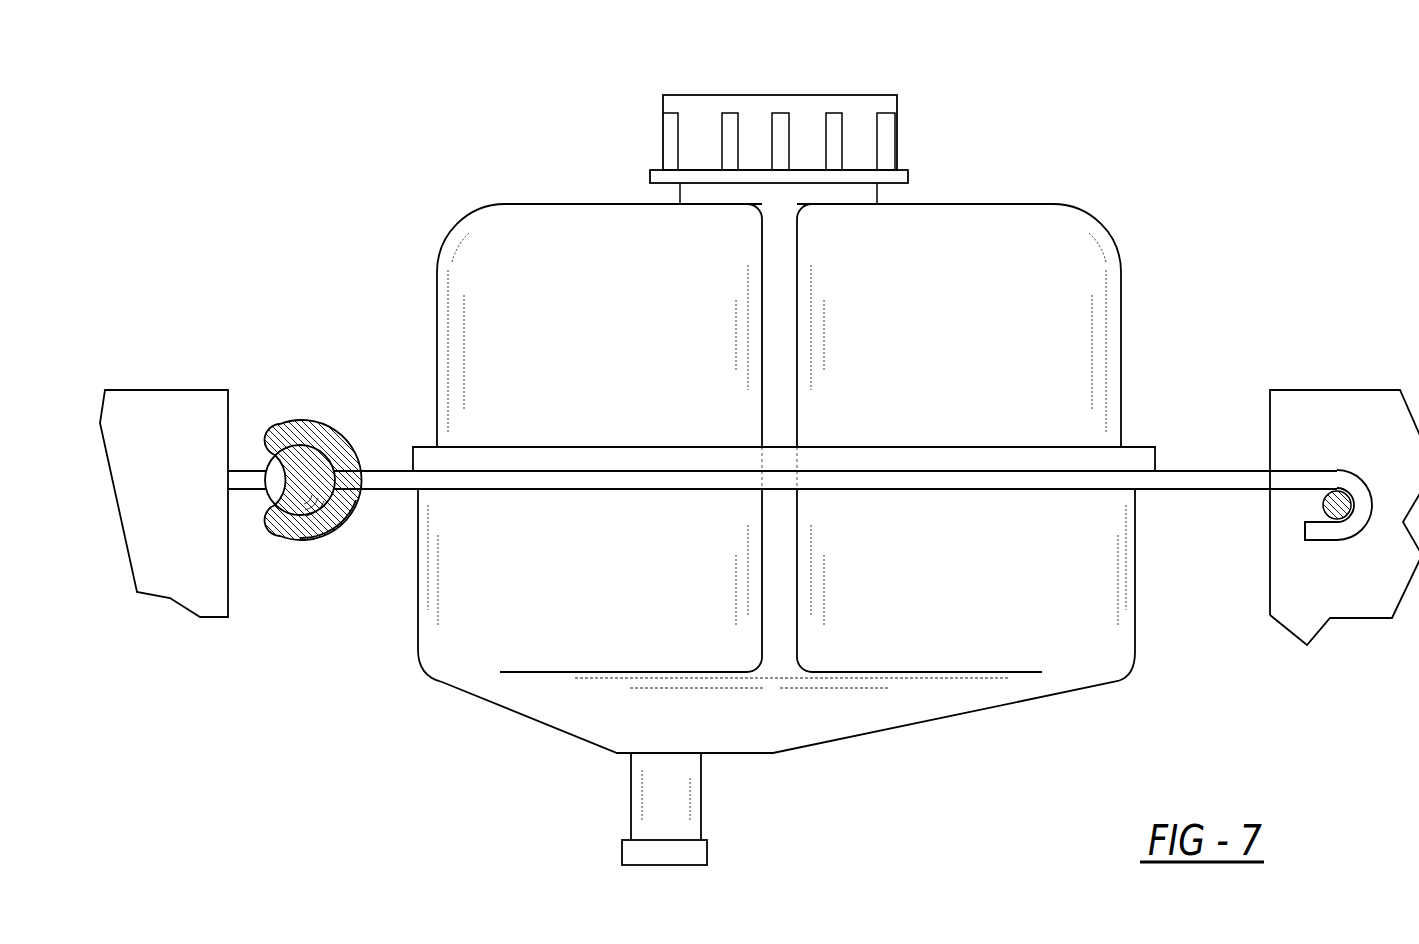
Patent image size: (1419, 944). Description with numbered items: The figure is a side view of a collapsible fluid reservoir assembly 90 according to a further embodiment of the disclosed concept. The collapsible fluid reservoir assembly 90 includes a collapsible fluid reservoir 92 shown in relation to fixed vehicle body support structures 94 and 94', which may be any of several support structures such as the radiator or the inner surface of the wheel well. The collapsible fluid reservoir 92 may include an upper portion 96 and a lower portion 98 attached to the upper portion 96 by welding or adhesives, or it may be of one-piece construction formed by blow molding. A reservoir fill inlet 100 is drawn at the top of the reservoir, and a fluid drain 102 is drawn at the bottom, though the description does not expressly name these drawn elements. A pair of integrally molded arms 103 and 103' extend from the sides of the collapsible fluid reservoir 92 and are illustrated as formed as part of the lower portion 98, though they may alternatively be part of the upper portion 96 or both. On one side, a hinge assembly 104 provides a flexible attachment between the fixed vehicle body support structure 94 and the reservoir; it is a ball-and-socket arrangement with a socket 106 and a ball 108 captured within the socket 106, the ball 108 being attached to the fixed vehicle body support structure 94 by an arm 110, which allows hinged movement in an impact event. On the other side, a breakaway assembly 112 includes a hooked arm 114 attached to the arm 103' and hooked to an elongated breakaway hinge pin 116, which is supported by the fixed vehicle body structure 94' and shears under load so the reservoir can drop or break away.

The collapsible fluid reservoir assembly 90 is at (1174, 166).
The collapsible fluid reservoir 92 is at (1024, 226).
The fixed vehicle body support structure 94 is at (164, 430).
The fixed vehicle body support structure 94' is at (1344, 476).
The upper portion 96 is at (523, 225).
The lower portion 98 is at (548, 697).
The cap 100 is at (810, 103).
The outlet 102 is at (678, 801).
The arm 103 is at (750, 399).
The arm 103' is at (1110, 420).
The hinge assembly 104 is at (303, 422).
The socket 106 is at (320, 527).
The ball 108 is at (290, 483).
The arm 110 is at (243, 477).
The breakaway assembly 112 is at (1317, 477).
The hooked arm 114 is at (1348, 522).
The elongated breakaway hinge pin 116 is at (1335, 505).